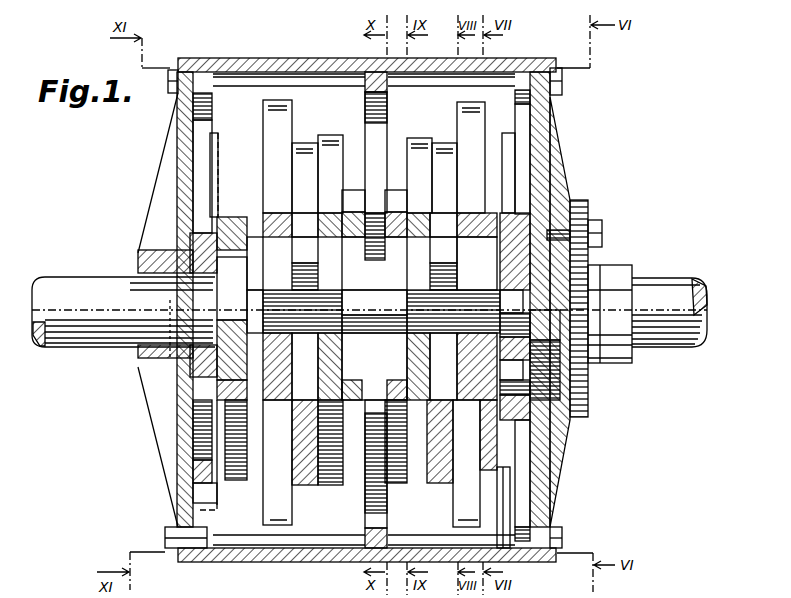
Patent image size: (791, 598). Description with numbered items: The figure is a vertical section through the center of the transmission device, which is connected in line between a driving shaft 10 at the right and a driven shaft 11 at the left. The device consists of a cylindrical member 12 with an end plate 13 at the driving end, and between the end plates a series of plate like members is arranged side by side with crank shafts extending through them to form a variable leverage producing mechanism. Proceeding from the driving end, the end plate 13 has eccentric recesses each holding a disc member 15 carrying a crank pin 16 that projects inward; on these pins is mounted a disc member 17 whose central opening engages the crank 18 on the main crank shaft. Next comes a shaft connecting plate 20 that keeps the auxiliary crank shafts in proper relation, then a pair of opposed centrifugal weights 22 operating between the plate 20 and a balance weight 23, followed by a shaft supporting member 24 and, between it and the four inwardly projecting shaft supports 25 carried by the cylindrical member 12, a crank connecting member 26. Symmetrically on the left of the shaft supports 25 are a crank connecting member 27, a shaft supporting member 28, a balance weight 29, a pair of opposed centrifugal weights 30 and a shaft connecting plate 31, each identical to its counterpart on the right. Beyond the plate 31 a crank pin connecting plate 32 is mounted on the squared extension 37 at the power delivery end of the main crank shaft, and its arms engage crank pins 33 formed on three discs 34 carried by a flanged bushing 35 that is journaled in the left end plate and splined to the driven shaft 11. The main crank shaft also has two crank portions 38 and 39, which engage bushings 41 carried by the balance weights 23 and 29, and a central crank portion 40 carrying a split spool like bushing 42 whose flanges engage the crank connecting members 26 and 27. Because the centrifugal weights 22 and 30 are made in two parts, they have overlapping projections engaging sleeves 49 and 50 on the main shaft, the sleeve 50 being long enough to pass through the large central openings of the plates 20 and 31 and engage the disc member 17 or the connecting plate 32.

The driving shaft 10 is at (667, 283).
The driven shaft 11 is at (58, 286).
The cylindrical member 12 is at (300, 58).
The end plate 13 is at (545, 140).
The disc member 15 is at (545, 355).
The crank pin 16 is at (515, 378).
The disc member 17 is at (560, 380).
The crank 18 is at (515, 275).
The shaft connecting plate 20 is at (488, 450).
The centrifugal weights 22 is at (470, 115).
The balance weight 23 is at (445, 487).
The shaft supporting member 24 is at (417, 140).
The inwardly projecting shaft supports 25 is at (375, 135).
The crank connecting member 26 is at (395, 205).
The crank connecting member 27 is at (350, 205).
The shaft supporting member 28 is at (328, 487).
The balance weight 29 is at (302, 487).
The centrifugal weights 30 is at (272, 118).
The shaft connecting plate 31 is at (250, 460).
The crank pin connecting plate 32 is at (242, 214).
The crank pins 33 is at (228, 400).
The discs 34 is at (200, 385).
The flanged bushing 35 is at (200, 470).
The squared extension 37 is at (232, 318).
The crank portion 38 is at (443, 263).
The crank portion 39 is at (305, 263).
The central crank portion 40 is at (380, 225).
The bushings 41 is at (374, 311).
The split spool like bushing 42 is at (374, 263).
The sleeve 49 is at (365, 291).
The sleeve 50 is at (372, 263).